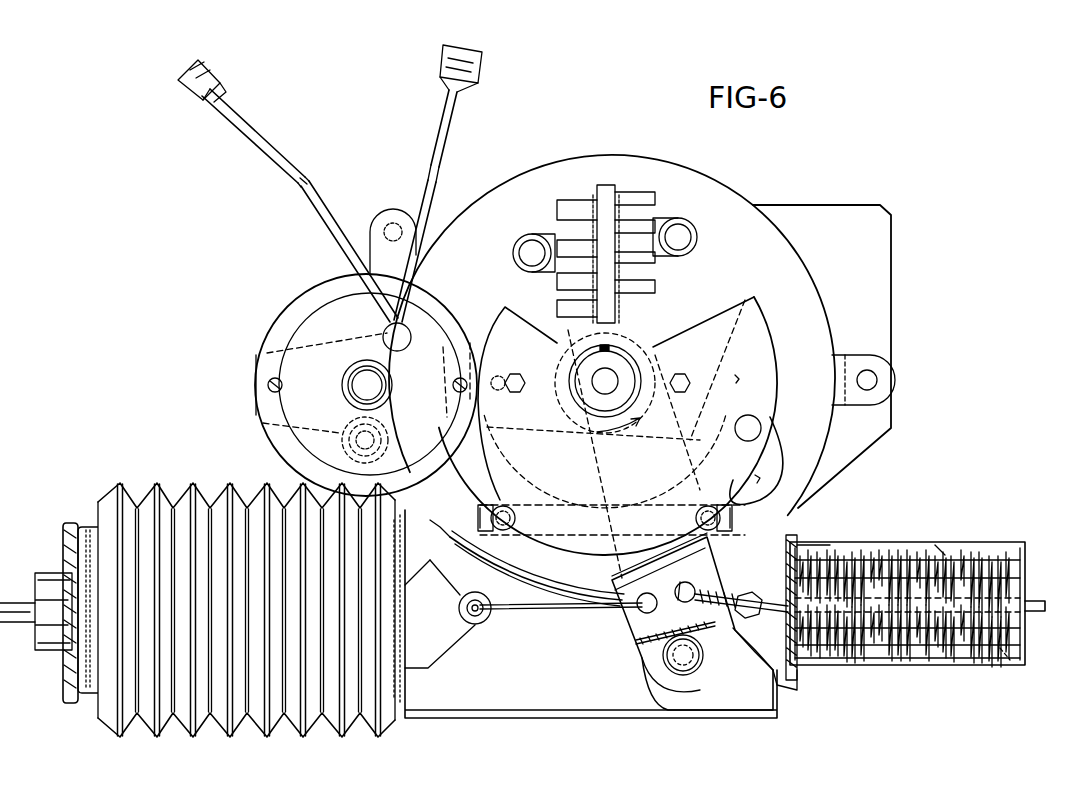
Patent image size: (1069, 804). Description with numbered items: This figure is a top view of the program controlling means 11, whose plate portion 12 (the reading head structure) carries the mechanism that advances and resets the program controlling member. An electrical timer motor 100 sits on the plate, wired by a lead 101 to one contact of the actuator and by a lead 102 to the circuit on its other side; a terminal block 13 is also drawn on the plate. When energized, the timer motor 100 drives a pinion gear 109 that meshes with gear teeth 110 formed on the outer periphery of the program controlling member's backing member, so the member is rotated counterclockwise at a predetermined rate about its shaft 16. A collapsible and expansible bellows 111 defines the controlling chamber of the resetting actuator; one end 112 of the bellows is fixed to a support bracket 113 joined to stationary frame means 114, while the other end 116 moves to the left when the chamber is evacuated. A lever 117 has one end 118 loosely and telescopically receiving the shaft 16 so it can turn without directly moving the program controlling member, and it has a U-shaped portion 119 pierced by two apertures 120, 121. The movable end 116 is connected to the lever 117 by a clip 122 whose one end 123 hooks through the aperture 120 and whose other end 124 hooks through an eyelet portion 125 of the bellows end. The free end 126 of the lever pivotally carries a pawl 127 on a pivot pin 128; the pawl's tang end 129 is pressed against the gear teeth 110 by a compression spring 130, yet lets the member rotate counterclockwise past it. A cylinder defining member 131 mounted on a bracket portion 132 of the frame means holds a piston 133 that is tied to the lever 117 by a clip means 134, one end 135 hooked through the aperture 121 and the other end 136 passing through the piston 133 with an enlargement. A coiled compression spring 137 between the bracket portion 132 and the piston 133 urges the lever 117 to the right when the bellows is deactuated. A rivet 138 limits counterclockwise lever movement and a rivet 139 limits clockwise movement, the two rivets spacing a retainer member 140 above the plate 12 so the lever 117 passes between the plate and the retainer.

The controlling means 11 is at (780, 171).
The plate portion 12 is at (650, 178).
The terminal block 13 is at (586, 190).
The shaft 16 is at (608, 378).
The electrical timer motor 100 is at (295, 320).
The lead 101 is at (335, 206).
The lead 102 is at (438, 150).
The pinion gear 109 is at (350, 425).
The gear teeth 110 is at (520, 612).
The bellows 111 is at (222, 496).
The end of bellows 112 is at (88, 520).
The support bracket 113 is at (62, 548).
The frame means 114 is at (512, 697).
The movable end of bellows 116 is at (447, 668).
The lever 117 is at (640, 655).
The end of lever 118 is at (670, 345).
The U-shaped portion 119 is at (662, 582).
The aperture 120 is at (640, 640).
The aperture 121 is at (736, 650).
The clip 122 is at (564, 612).
The end of clip 123 is at (640, 610).
The end of clip 124 is at (482, 618).
The eyelet portion 125 is at (445, 632).
The free end of lever 126 is at (665, 700).
The pawl 127 is at (780, 678).
The pivot pin 128 is at (690, 662).
The tang end 129 is at (812, 548).
The compression spring 130 is at (742, 566).
The cylinder defining member 131 is at (880, 545).
The bracket portion 132 is at (792, 545).
The piston 133 is at (1008, 545).
The clip means 134 is at (770, 612).
The end of clip means 135 is at (690, 582).
The end of clip means 136 is at (1000, 665).
The coiled compression spring 137 is at (935, 545).
The rivet 138 is at (730, 518).
The rivet 139 is at (486, 520).
The retainer member 140 is at (518, 528).